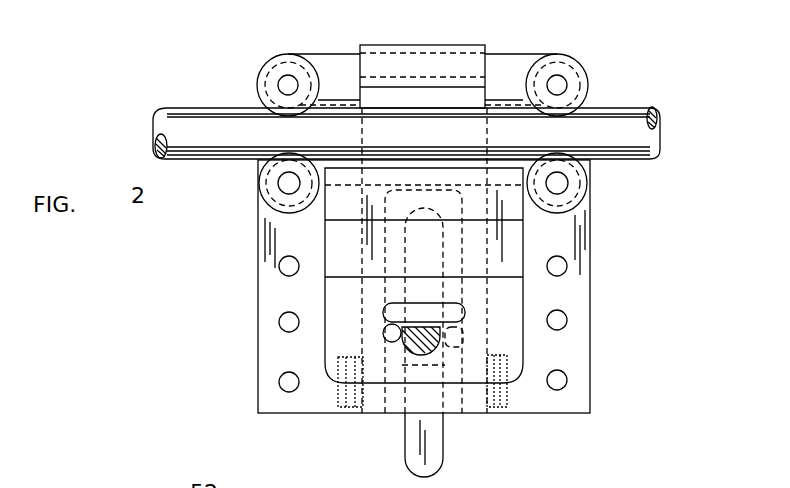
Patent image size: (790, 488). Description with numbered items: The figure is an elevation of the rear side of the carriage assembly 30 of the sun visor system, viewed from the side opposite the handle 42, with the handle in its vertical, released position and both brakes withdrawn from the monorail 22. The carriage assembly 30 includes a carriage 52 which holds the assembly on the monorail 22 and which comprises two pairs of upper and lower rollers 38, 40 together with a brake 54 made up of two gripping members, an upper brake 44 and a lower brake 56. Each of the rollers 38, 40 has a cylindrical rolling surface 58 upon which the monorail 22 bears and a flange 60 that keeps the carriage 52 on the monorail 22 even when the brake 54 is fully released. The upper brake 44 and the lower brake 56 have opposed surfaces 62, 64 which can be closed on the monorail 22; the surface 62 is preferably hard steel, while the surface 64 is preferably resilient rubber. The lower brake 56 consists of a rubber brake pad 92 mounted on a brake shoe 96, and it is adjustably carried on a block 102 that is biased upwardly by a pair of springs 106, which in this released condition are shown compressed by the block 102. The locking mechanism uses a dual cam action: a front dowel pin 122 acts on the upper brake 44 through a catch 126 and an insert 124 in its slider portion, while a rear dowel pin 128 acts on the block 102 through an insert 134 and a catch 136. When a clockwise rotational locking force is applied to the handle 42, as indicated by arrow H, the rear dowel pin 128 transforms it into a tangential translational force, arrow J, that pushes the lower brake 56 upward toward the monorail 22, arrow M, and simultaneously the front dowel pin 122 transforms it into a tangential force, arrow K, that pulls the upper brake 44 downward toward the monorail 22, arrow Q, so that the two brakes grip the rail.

The monorail 22 is at (213, 117).
The carriage assembly 30 is at (178, 243).
The upper rollers 38 is at (262, 68).
The lower rollers 40 is at (265, 195).
The handle 42 is at (433, 450).
The upper brake 44 is at (447, 45).
The carriage 52 is at (250, 55).
The brake 54 is at (493, 135).
The lower brake 56 is at (337, 208).
The cylindrical rolling surface 58 is at (278, 55).
The flange 60 is at (320, 55).
The opposed surface of upper brake 62 is at (450, 80).
The opposed surface of lower brake 64 is at (383, 150).
The brake pad 92 is at (342, 165).
The brake shoe 96 is at (510, 238).
The block 102 is at (500, 362).
The springs 106 is at (345, 375).
The front dowel pin 122 is at (478, 323).
The insert 124 is at (457, 378).
The catch 126 is at (466, 314).
The rear dowel pin 128 is at (400, 345).
The insert 134 is at (383, 310).
The catch 136 is at (402, 348).
The arrow H is at (356, 441).
The arrow J is at (384, 296).
The arrow K is at (465, 345).
The arrow M is at (425, 202).
The arrow Q is at (424, 84).